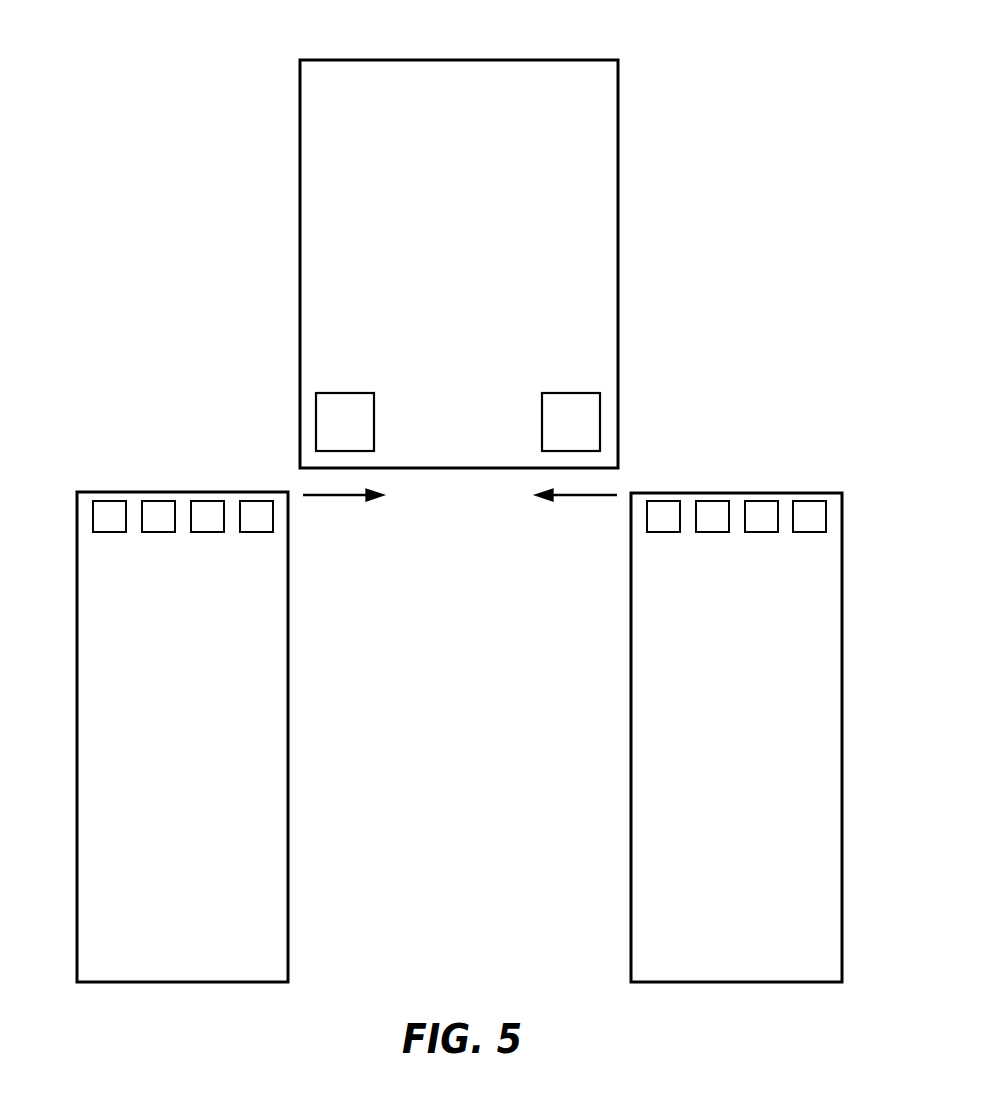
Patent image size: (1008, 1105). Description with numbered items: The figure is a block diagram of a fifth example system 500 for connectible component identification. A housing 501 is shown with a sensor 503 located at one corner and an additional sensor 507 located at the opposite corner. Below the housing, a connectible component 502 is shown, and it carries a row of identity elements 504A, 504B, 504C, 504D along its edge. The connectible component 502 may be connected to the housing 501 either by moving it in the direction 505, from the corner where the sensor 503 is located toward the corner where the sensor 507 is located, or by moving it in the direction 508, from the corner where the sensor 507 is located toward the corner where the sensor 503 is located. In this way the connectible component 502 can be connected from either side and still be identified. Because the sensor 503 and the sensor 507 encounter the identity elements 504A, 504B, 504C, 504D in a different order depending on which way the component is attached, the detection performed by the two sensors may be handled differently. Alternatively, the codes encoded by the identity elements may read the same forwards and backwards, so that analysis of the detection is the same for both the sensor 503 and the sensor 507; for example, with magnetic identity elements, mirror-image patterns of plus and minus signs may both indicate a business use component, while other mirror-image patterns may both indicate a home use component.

The system 500 is at (252, 44).
The housing 501 is at (618, 242).
The connectible component 502 is at (288, 585).
The sensor 503 is at (600, 420).
The identity element 504A is at (102, 501).
The identity element 504B is at (158, 501).
The identity element 504C is at (212, 501).
The identity element 504D is at (268, 501).
The direction 505 is at (585, 499).
The sensor 507 is at (316, 422).
The direction 508 is at (335, 499).